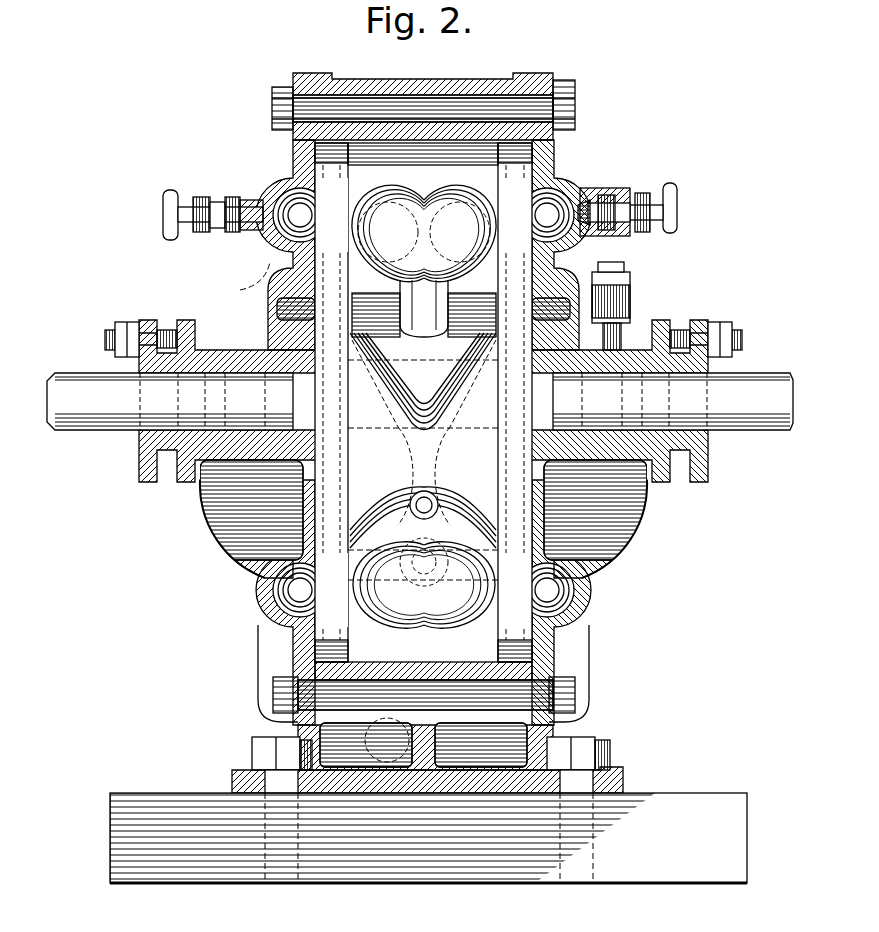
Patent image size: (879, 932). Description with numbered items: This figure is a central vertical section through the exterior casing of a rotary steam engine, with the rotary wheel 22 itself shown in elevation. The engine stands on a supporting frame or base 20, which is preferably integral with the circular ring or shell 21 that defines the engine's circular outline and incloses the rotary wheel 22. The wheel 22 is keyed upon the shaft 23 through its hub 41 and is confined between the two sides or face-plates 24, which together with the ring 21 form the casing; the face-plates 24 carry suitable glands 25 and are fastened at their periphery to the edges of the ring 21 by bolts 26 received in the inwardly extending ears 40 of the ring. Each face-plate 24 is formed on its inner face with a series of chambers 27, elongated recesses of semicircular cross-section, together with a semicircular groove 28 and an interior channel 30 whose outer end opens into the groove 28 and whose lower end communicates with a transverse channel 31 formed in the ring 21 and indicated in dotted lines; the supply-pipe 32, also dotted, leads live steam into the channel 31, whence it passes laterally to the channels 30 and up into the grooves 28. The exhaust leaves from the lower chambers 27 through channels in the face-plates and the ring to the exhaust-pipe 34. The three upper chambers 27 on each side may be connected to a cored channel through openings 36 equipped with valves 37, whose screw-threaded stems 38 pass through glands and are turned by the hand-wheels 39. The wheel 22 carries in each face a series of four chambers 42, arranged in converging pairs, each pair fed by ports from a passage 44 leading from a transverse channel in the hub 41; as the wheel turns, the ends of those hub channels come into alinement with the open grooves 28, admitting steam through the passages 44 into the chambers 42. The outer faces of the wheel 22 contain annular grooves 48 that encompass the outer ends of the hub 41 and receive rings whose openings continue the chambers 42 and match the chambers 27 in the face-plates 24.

The supporting frame or base 20 is at (620, 775).
The circular ring or shell 21 is at (452, 82).
The rotary wheel 22 is at (295, 150).
The shaft 23 is at (420, 395).
The sides or face-plates 24 is at (296, 80).
The glands 25 is at (423, 323).
The bolts 26 is at (380, 100).
The chambers 27 is at (608, 590).
The semicircular groove 28 is at (590, 300).
The channel 30 is at (262, 538).
The transverse channel 31 is at (424, 406).
The supply-pipe 32 is at (423, 562).
The exhaust-pipe 34 is at (431, 744).
The openings 36 is at (585, 200).
The valves 37 is at (608, 195).
The screw-threaded stems 38 is at (192, 200).
The operating-handles or hand-wheels 39 is at (163, 212).
The ears 40 is at (410, 660).
The hub 41 is at (450, 305).
The chambers 42 is at (455, 405).
The channel or passage 44 is at (400, 300).
The annular grooves 48 is at (240, 518).